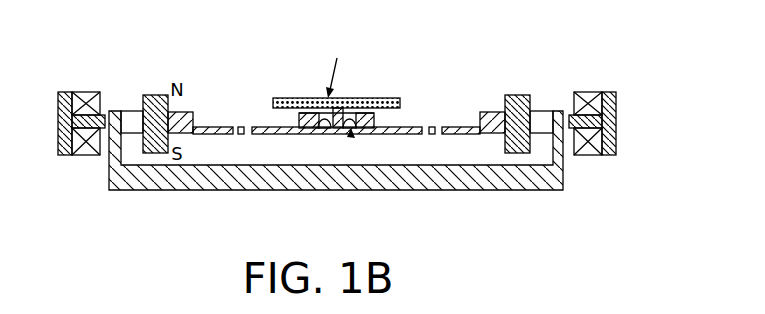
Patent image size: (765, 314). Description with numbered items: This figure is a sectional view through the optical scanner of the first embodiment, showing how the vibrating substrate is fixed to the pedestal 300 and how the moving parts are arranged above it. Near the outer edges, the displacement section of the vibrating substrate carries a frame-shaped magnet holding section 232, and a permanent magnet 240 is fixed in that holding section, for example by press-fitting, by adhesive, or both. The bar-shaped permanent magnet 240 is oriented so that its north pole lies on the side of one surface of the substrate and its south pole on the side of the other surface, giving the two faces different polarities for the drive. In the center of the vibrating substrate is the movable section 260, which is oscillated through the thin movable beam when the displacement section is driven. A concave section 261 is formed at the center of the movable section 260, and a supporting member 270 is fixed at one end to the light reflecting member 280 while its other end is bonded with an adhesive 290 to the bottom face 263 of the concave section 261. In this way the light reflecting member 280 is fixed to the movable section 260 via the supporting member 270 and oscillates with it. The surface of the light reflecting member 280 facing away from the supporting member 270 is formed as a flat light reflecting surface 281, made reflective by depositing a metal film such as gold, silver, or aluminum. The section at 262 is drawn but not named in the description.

The magnet holding section 232 is at (533, 124).
The permanent magnet 240 is at (517, 153).
The movable section 260 is at (370, 128).
The concave section 261 is at (351, 111).
The lower portion of coil unit 262 is at (308, 112).
The bottom face 263 is at (352, 137).
The supporting member 270 is at (337, 129).
The light reflecting member 280 is at (287, 98).
The light reflecting surface 281 is at (335, 67).
The adhesive 290 is at (318, 130).
The pedestal 300 is at (552, 177).